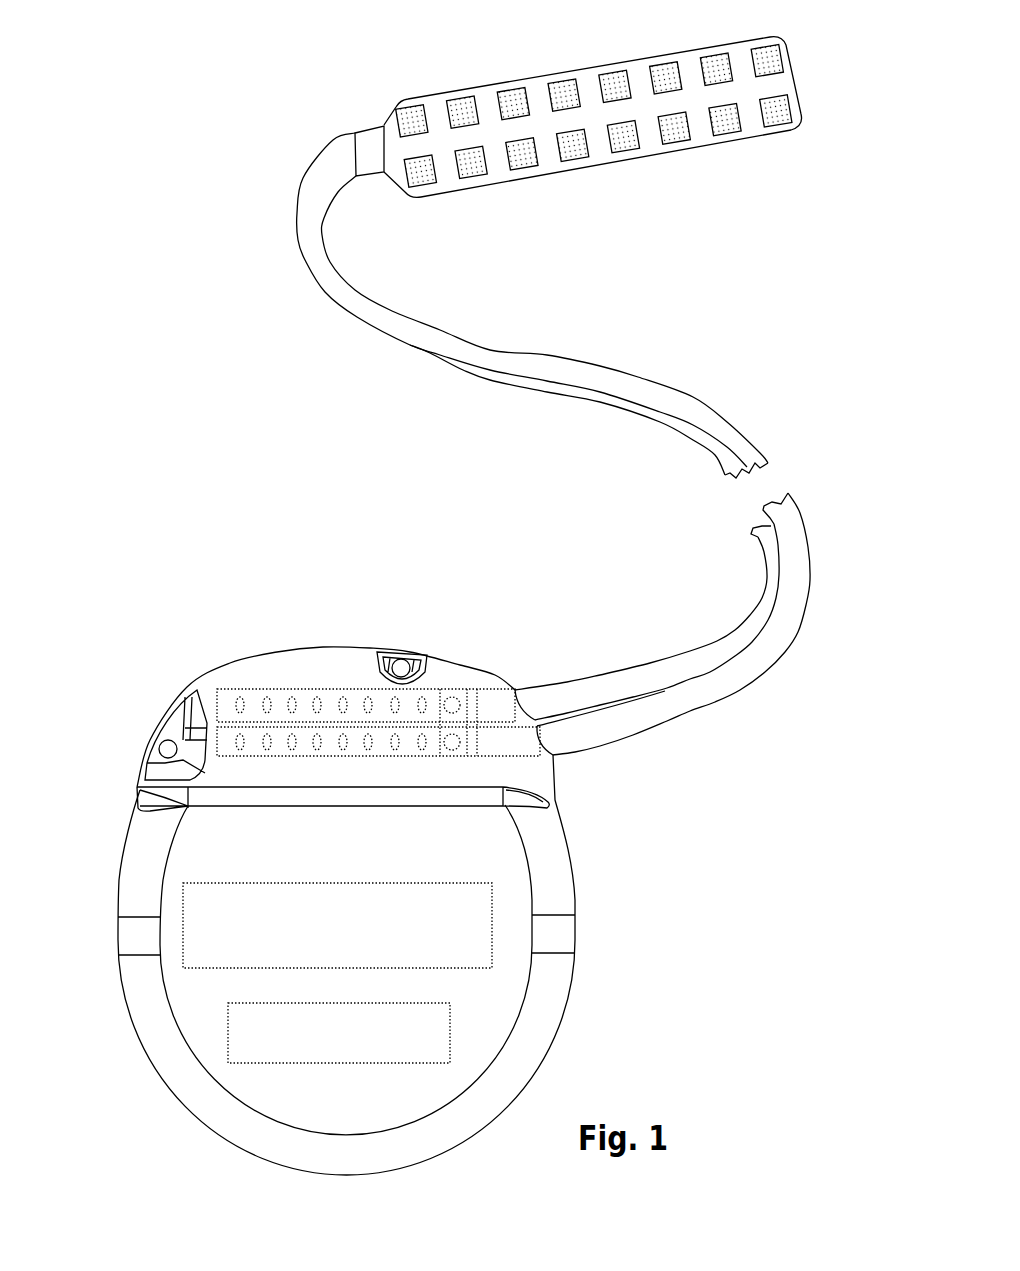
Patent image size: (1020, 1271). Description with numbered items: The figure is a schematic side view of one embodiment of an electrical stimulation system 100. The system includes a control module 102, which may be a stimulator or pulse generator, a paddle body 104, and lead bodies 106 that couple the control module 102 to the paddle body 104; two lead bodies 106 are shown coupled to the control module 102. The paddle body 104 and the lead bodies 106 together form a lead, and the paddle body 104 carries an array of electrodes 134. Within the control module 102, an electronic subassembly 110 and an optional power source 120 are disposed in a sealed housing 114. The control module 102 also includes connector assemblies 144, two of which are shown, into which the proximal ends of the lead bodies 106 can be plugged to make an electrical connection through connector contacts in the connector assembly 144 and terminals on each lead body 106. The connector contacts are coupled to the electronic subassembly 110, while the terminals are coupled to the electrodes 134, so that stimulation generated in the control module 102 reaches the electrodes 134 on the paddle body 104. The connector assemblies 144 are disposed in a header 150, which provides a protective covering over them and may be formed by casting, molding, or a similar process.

The electrical stimulation system 100 is at (748, 296).
The control module 102 is at (166, 676).
The paddle body 104 is at (788, 80).
The lead bodies 106 is at (638, 378).
The electronic subassembly 110 is at (202, 932).
The sealed housing 114 is at (185, 860).
The power source 120 is at (245, 1038).
The electrodes 134 is at (805, 142).
The connector assemblies 144 is at (430, 688).
The header 150 is at (319, 658).